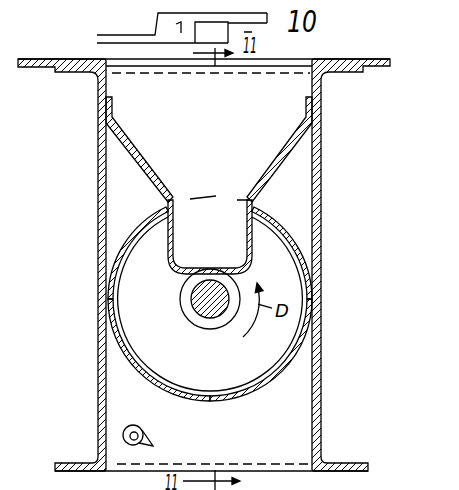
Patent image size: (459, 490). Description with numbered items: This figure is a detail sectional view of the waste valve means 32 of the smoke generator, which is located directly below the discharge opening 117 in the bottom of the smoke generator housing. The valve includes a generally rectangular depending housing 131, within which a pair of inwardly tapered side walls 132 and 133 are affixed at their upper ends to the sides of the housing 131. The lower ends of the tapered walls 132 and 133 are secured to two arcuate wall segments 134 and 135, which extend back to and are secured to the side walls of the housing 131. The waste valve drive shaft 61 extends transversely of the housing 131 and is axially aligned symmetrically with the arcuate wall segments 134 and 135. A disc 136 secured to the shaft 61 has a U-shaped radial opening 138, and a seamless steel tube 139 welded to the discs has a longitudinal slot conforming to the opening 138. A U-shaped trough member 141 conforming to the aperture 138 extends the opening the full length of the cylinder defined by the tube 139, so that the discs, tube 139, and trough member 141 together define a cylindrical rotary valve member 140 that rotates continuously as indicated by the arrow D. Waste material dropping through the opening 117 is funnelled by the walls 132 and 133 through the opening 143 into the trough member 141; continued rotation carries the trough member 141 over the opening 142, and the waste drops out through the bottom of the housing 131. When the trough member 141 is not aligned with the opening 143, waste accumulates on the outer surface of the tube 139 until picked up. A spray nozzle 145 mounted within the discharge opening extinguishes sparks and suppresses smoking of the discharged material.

The waste valve means 32 is at (204, 265).
The waste valve drive shaft 61 is at (212, 308).
The discharge opening 117 is at (283, 59).
The depending housing 131 is at (320, 147).
The inwardly tapered side wall 132 is at (141, 166).
The inwardly tapered side wall 133 is at (274, 159).
The arcuate wall segment 134 is at (133, 222).
The arcuate wall segment 135 is at (285, 225).
The disc 136 is at (247, 375).
The U-shaped radial opening 138 is at (230, 251).
The seamless steel tube 139 is at (197, 397).
The rotary valve member 140 is at (302, 340).
The U-shaped trough member 141 is at (173, 273).
The opening 142 is at (272, 470).
The opening 143 is at (191, 197).
The spray nozzle 145 is at (140, 426).